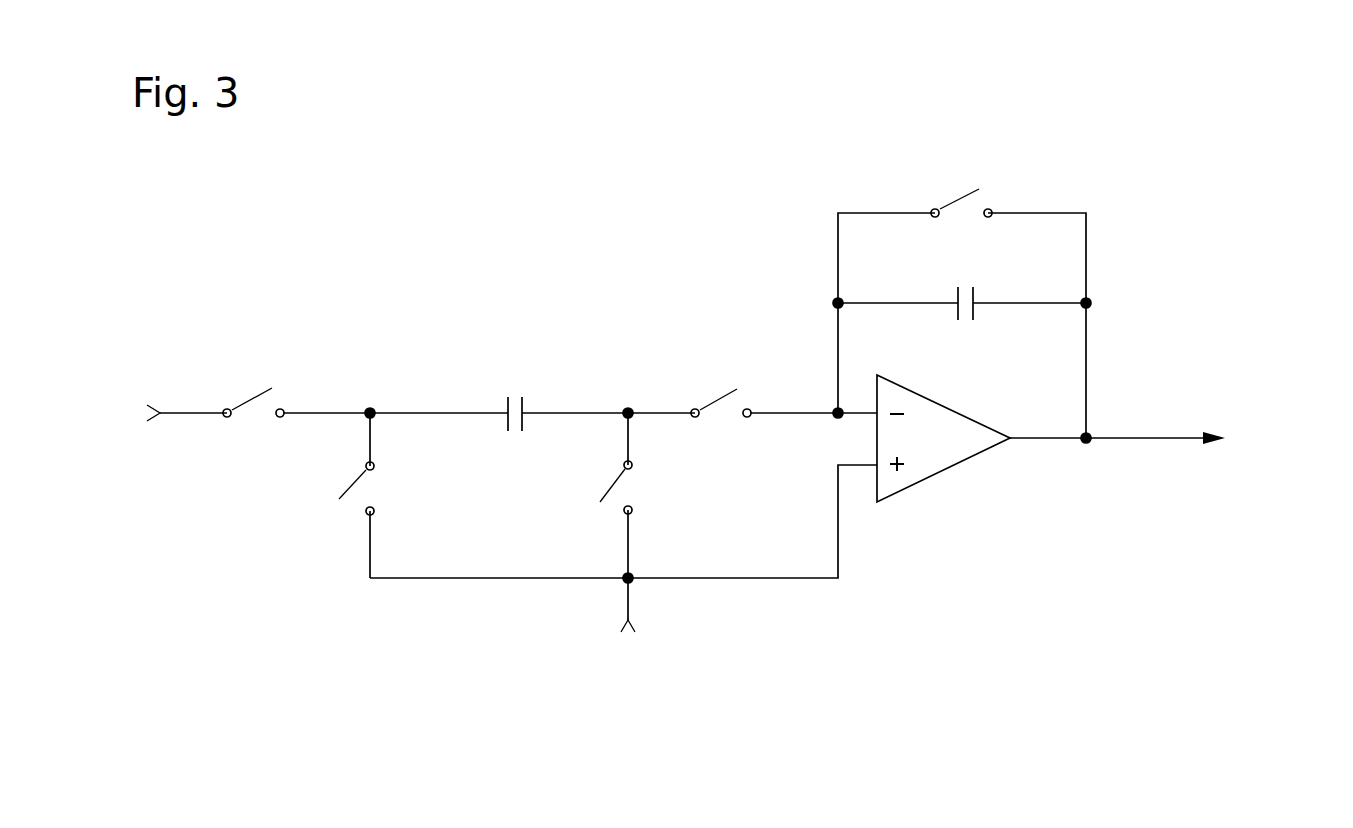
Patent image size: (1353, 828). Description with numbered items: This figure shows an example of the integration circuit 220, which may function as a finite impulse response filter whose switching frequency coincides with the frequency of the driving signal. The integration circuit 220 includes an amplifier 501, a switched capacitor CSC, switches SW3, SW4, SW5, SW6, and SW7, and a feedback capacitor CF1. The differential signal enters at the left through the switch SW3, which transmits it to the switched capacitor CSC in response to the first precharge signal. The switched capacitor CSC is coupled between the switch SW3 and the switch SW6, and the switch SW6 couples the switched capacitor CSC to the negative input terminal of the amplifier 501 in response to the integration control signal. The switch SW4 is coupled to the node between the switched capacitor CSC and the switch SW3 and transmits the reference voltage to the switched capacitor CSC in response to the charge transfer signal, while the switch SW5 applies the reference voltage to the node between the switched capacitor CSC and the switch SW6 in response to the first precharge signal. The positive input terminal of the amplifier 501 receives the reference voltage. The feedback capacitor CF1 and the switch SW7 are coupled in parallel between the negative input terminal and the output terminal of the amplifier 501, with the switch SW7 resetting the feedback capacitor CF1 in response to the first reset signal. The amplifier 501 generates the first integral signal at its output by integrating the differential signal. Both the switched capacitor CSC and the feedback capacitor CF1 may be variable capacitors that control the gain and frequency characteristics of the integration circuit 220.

The integration circuit 220 is at (1145, 177).
The amplifier 501 is at (943, 475).
The switch SW3 is at (244, 360).
The switch SW4 is at (348, 483).
The switch SW5 is at (604, 483).
The switch SW6 is at (712, 358).
The switch SW7 is at (965, 148).
The switched capacitor CSC is at (510, 391).
The feedback capacitor CF1 is at (966, 325).